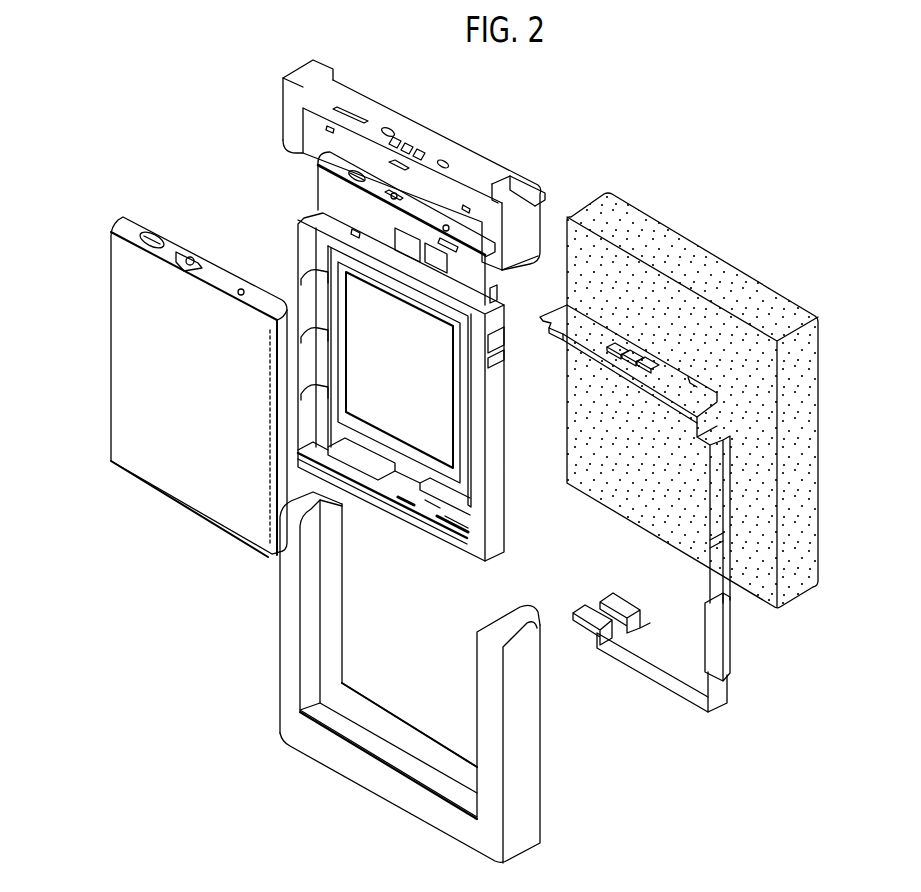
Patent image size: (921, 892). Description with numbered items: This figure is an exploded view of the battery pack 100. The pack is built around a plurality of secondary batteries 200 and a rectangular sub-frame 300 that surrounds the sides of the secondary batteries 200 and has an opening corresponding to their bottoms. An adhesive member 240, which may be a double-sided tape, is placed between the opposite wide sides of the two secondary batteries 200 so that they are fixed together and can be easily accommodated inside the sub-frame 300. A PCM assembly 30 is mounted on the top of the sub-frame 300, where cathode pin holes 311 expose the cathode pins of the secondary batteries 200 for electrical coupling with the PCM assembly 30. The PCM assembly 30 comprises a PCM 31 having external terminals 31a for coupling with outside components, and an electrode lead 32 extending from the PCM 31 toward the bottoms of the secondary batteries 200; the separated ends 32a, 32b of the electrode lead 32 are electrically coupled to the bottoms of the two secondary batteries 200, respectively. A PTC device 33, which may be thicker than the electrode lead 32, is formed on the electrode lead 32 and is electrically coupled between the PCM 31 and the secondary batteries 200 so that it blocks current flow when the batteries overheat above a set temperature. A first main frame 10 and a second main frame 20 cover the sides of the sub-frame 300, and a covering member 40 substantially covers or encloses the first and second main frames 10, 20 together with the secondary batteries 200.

The battery pack 100 is at (147, 130).
The secondary battery 200 is at (318, 177).
The first main frame 10 is at (472, 145).
The sub-frame 300 is at (508, 523).
The cathode pin hole 311 is at (415, 272).
The adhesive member 240 is at (460, 416).
The second main frame 20 is at (543, 788).
The covering member 40 is at (714, 250).
The PCM assembly 30 is at (731, 679).
The PCM 31 is at (694, 400).
The external terminal 31a is at (654, 354).
The electrode lead 32 is at (718, 508).
The end of electrode lead 32a is at (590, 622).
The end of electrode lead 32b is at (630, 606).
The PTC device 33 is at (723, 636).